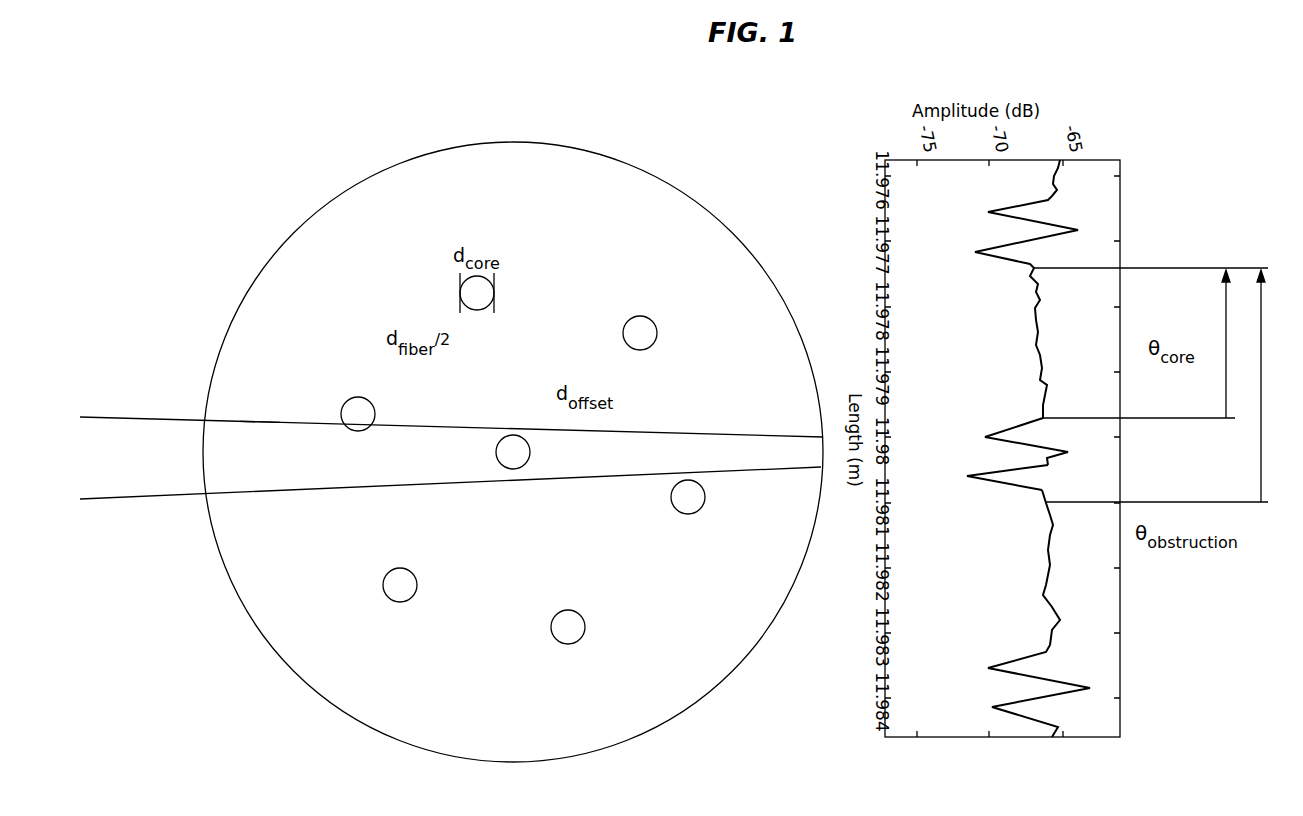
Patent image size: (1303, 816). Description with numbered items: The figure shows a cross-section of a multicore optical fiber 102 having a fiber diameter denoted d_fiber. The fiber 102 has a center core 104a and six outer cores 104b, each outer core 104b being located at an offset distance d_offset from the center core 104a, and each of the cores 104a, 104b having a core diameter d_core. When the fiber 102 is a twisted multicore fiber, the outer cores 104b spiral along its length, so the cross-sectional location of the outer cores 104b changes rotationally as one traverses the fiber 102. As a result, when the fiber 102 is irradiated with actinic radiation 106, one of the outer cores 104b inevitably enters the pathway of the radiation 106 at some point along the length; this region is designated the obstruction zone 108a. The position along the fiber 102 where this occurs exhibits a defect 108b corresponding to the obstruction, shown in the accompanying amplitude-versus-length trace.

The multicore optical fiber 102 is at (590, 151).
The center core 104a is at (503, 469).
The outer cores 104b is at (572, 610).
The actinic radiation 106 is at (100, 415).
The obstruction zone 108a is at (258, 442).
The defect 108b is at (968, 478).